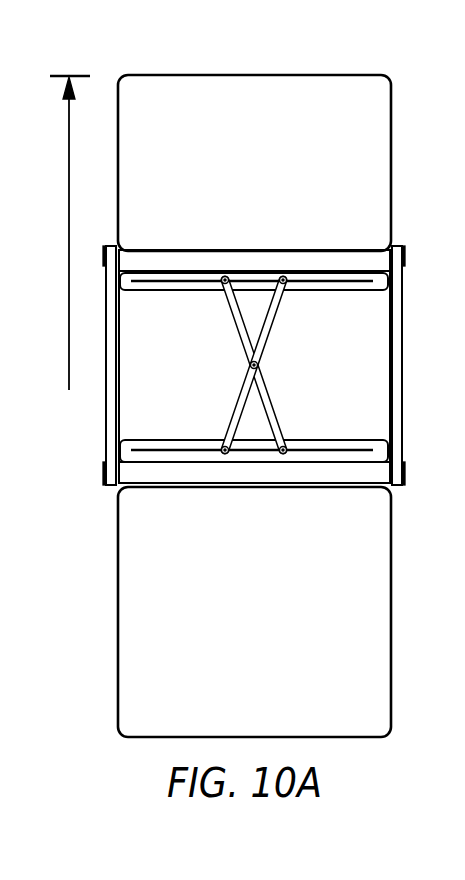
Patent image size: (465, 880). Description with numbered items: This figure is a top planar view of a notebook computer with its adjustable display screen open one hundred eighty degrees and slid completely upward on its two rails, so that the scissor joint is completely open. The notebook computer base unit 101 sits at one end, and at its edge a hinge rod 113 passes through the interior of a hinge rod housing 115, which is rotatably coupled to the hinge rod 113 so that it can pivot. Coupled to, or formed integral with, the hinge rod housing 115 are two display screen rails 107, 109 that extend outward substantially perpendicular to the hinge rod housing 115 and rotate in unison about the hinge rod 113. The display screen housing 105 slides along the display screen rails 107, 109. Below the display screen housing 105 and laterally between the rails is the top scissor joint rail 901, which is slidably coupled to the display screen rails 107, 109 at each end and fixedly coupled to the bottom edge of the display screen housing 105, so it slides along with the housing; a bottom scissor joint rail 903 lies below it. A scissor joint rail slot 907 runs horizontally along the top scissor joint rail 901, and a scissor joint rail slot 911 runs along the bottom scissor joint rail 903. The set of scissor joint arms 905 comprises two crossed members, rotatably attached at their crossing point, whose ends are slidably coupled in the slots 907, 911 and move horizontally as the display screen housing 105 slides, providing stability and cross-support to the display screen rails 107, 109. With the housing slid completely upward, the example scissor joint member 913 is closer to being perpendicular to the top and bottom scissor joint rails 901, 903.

The notebook computer base unit 101 is at (281, 660).
The display screen housing 105 is at (278, 150).
The display screen rail 107 is at (402, 308).
The display screen rail 109 is at (107, 388).
The hinge rod 113 is at (103, 472).
The hinge rod housing 115 is at (277, 472).
The top scissor joint rail 901 is at (360, 289).
The bottom scissor joint rail 903 is at (358, 440).
The set of scissor joint arms 905 is at (268, 331).
The scissor joint rail slot 907 is at (148, 281).
The scissor joint rail slot 911 is at (188, 445).
The scissor joint member 913 is at (273, 396).